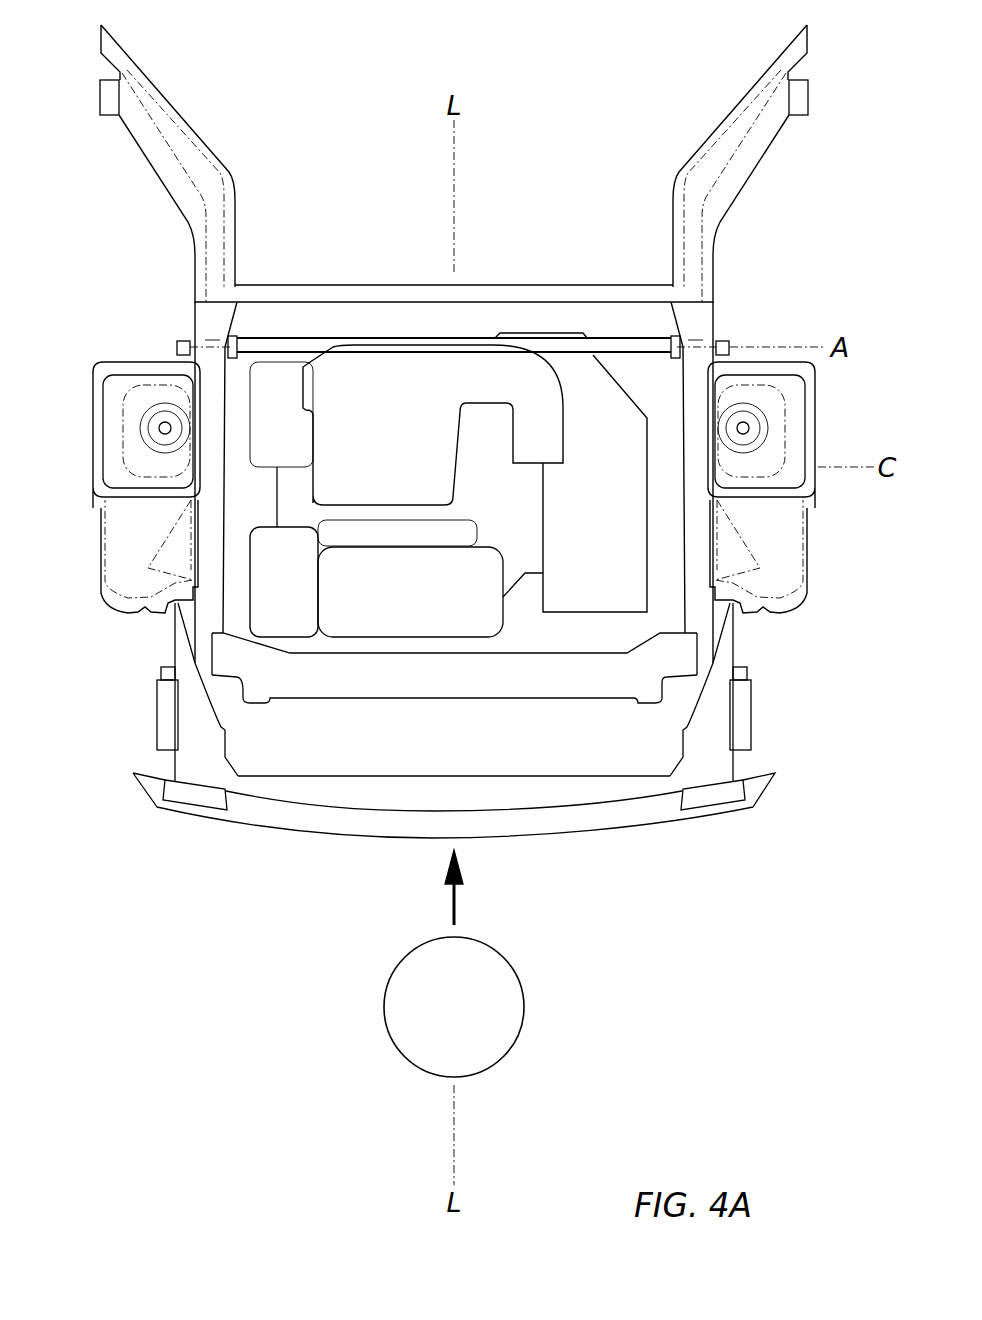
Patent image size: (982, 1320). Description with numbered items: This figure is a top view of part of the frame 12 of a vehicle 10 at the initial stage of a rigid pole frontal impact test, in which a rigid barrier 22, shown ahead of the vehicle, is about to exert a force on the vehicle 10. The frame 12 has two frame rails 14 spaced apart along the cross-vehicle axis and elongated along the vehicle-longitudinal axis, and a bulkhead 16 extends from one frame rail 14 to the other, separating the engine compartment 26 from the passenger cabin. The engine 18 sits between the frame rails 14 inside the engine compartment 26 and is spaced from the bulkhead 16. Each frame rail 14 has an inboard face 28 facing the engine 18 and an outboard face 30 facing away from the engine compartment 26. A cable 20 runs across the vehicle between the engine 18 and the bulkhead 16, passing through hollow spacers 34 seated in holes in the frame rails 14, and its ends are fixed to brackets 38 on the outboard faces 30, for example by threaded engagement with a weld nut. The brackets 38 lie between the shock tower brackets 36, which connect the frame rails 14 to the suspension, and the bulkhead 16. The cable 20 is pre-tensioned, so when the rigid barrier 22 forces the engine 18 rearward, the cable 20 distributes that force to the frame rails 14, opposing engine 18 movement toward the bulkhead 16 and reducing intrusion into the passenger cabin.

The vehicle 10 is at (838, 212).
The frame 12 is at (149, 168).
The frame rails 14 is at (240, 322).
The bulkhead 16 is at (413, 285).
The engine 18 is at (547, 463).
The cable 20 is at (362, 338).
The rigid barrier 22 is at (512, 962).
The engine compartment 26 is at (250, 508).
The inboard face 28 is at (227, 593).
The outboard face 30 is at (195, 620).
The spacer 34 is at (220, 345).
The shock tower brackets 36 is at (123, 413).
The bracket 38 is at (187, 342).